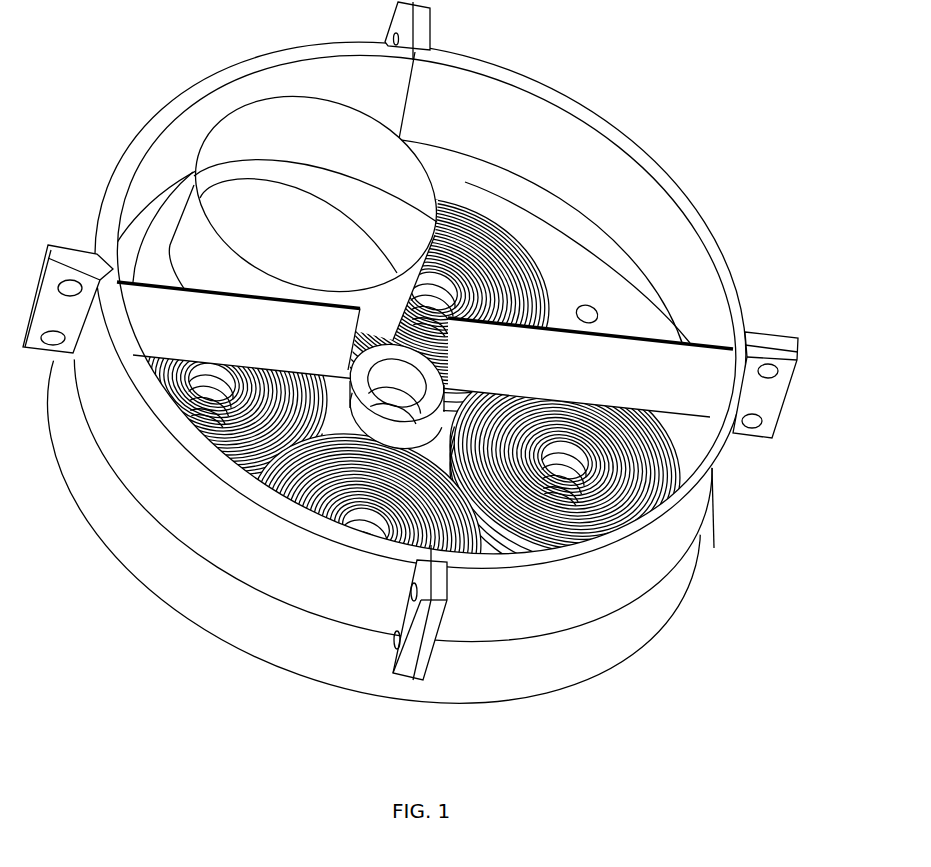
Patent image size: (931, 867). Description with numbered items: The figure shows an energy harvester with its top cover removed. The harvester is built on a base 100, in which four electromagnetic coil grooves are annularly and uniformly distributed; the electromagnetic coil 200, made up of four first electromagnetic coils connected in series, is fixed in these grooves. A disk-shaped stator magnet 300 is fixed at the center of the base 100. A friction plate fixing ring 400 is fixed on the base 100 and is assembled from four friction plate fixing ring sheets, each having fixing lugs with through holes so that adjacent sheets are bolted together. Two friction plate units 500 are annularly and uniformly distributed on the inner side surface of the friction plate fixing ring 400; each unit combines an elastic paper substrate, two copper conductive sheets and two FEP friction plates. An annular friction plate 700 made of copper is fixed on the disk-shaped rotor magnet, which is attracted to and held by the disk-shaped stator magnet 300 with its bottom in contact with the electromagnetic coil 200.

The base 100 is at (566, 665).
The electromagnetic coil 200 is at (497, 257).
The disk-shaped stator magnet 300 is at (423, 361).
The friction plate fixing ring 400 is at (584, 110).
The friction plate unit 500 is at (603, 353).
The annular friction plate 700 is at (398, 150).